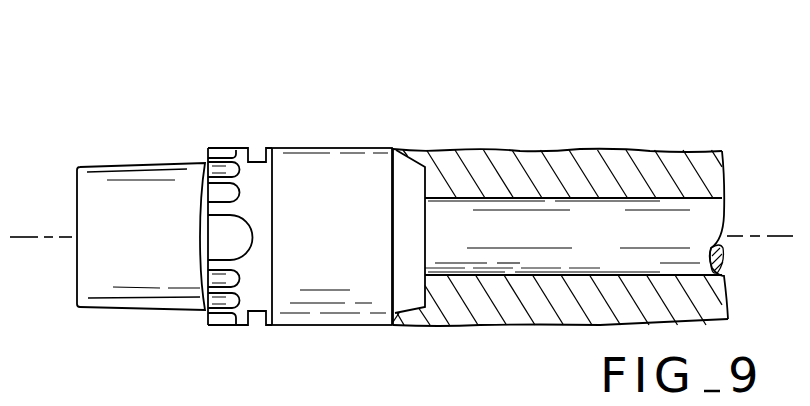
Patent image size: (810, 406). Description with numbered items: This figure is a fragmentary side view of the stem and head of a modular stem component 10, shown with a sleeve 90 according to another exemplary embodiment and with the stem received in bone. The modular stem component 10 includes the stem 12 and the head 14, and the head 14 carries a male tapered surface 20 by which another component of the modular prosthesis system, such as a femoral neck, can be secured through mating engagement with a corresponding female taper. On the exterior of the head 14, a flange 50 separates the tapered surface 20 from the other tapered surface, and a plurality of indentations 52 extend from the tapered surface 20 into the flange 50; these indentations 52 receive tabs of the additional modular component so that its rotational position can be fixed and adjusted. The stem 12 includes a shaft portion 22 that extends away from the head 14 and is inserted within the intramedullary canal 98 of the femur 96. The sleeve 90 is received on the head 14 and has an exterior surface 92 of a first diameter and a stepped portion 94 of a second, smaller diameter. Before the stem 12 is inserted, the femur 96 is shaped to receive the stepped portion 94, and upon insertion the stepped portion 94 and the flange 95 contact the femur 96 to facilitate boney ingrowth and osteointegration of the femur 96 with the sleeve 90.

The modular stem component 10 is at (374, 62).
The stem 12 is at (536, 185).
The head 14 is at (100, 136).
The tapered surface 20 is at (150, 290).
The shaft portion 22 is at (520, 262).
The flange 50 is at (220, 132).
The indentations 52 is at (210, 155).
The sleeve 90 is at (290, 125).
The exterior surface 92 is at (339, 170).
The stepped portion 94 is at (411, 173).
The flange 95 is at (399, 322).
The femur 96 is at (590, 163).
The intramedullary canal 98 is at (662, 195).